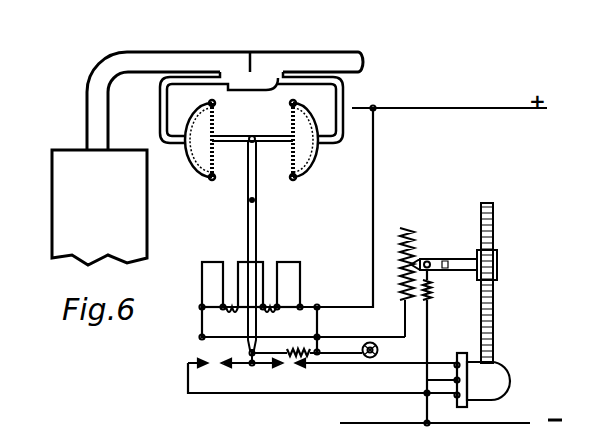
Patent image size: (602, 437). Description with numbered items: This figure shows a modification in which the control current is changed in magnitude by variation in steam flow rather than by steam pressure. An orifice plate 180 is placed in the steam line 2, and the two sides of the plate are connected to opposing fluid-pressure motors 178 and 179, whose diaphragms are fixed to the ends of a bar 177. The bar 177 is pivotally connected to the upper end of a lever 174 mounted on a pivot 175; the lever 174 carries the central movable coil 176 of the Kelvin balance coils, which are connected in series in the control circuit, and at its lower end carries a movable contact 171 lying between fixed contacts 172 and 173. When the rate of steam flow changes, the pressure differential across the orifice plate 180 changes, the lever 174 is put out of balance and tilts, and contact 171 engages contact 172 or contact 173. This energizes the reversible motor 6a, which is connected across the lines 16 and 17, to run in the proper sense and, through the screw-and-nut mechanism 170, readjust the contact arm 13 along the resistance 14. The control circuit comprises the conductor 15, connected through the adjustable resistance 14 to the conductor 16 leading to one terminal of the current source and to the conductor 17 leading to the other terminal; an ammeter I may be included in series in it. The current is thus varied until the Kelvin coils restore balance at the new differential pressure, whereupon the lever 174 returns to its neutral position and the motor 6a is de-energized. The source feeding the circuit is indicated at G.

The steam line 2 is at (207, 50).
The orifice plate 180 is at (255, 63).
The bar 177 is at (288, 137).
The fluid-pressure motor 178 is at (200, 168).
The fluid-pressure motor 179 is at (311, 162).
The pivot 175 is at (256, 199).
The lever 174 is at (248, 236).
The central movable coil 176 is at (258, 266).
The fixed contact 172 is at (193, 362).
The movable contact 171 is at (236, 365).
The fixed contact 173 is at (312, 365).
The generator G is at (58, 207).
The conductor 16 is at (478, 108).
The resistance 14 is at (428, 218).
The contact arm 13 is at (431, 261).
The screw-and-nut mechanism 170 is at (492, 257).
The ammeter I is at (372, 342).
The conductor 15 is at (427, 352).
The reversible motor 6a is at (499, 368).
The conductor 17 is at (500, 423).